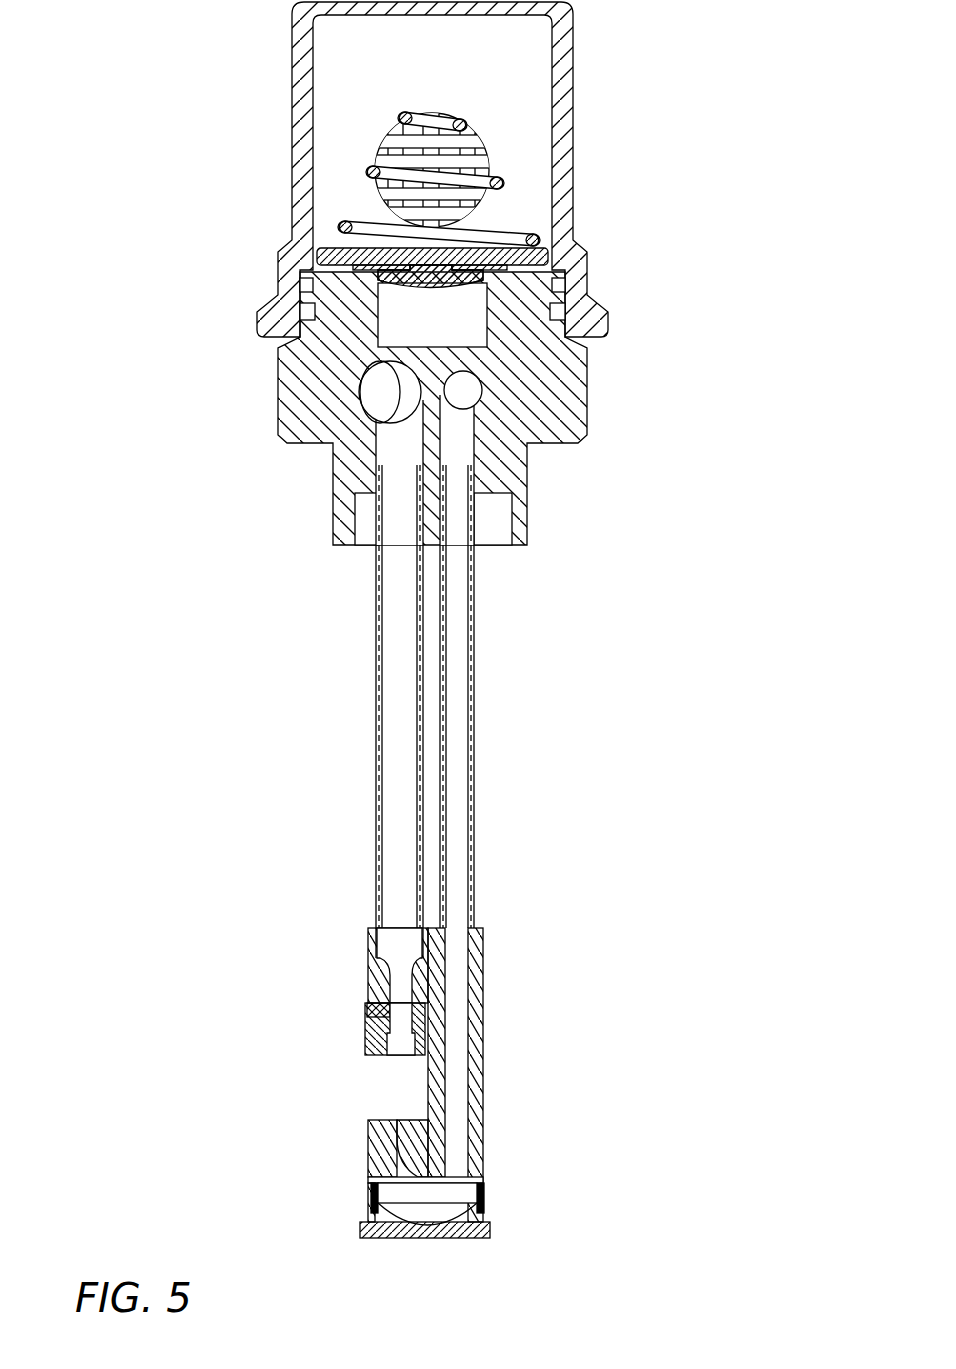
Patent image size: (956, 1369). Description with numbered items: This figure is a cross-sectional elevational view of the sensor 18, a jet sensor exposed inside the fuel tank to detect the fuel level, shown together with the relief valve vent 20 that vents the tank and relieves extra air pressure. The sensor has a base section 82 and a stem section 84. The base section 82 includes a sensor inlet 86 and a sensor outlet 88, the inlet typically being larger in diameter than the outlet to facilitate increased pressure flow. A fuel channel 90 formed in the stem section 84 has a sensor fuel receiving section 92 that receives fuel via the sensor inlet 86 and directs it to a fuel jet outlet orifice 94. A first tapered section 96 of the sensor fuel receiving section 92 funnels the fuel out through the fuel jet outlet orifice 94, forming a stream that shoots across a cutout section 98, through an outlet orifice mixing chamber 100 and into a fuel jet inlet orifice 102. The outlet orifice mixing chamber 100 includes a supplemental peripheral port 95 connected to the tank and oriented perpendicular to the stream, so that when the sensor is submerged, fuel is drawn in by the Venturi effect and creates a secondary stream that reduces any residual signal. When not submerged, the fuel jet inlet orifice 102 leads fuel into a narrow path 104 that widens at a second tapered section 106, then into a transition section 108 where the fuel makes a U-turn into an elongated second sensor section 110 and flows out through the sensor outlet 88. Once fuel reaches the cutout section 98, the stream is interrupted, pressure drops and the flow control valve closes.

The relief valve vent 20 is at (193, 115).
The sensor 18 is at (262, 840).
The base section 82 is at (335, 495).
The stem section 84 is at (472, 712).
The sensor inlet 86 is at (382, 392).
The sensor outlet 88 is at (470, 388).
The fuel channel 90 is at (400, 770).
The sensor fuel receiving section 92 is at (400, 618).
The fuel jet outlet orifice 94 is at (380, 967).
The supplemental peripheral port 95 is at (367, 1017).
The first tapered section 96 is at (408, 977).
The cutout section 98 is at (398, 1120).
The outlet orifice mixing chamber 100 is at (393, 1052).
The fuel jet inlet orifice 102 is at (398, 1122).
The narrow path 104 is at (397, 1137).
The second tapered section 106 is at (393, 1168).
The transition section 108 is at (455, 1195).
The elongated second sensor section 110 is at (457, 912).